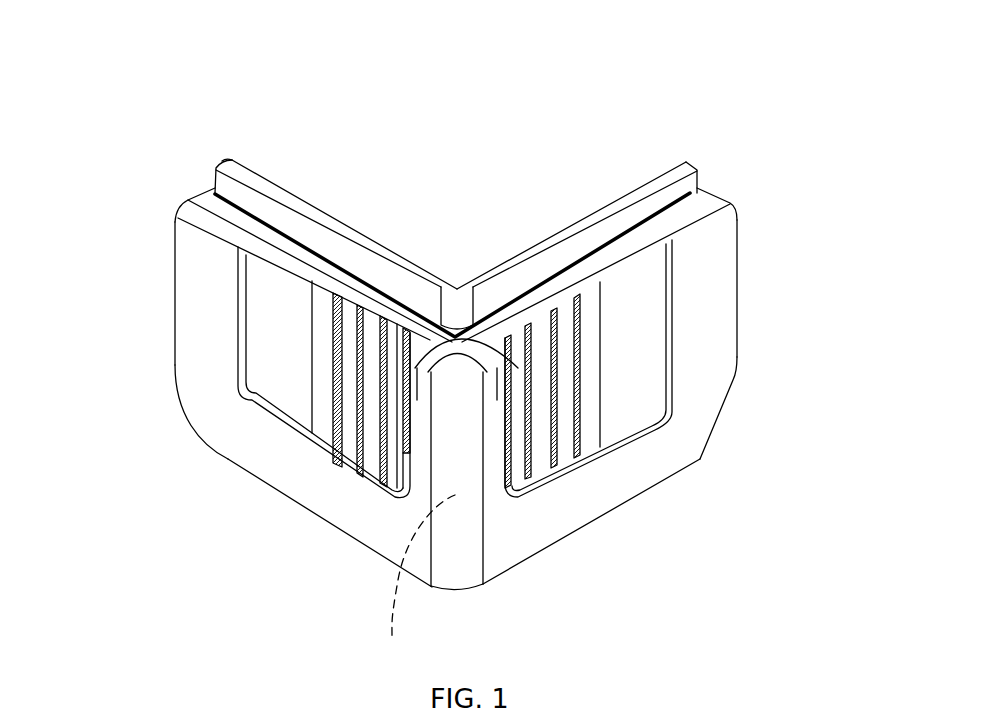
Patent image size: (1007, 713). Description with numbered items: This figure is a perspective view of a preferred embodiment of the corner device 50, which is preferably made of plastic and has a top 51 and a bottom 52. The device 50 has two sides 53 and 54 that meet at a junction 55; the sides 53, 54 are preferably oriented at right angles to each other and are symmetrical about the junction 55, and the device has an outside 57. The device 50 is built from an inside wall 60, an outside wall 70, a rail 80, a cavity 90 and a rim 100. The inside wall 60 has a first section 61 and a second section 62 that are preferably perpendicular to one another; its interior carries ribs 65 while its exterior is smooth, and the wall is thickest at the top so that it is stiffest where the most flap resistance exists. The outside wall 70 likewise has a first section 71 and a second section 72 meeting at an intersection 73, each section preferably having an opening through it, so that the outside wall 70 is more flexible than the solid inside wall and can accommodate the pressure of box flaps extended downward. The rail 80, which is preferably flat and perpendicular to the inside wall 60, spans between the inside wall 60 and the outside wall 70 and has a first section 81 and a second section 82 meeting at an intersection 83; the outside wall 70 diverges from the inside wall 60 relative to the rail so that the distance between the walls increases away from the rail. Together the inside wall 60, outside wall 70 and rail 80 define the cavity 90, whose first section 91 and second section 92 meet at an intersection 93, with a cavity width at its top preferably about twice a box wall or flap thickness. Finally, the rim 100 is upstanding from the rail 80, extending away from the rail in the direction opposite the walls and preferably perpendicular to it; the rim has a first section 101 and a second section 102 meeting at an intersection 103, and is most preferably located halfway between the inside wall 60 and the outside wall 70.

The corner device 50 is at (466, 86).
The top 51 is at (668, 158).
The bottom 52 is at (590, 527).
The side 53 is at (180, 272).
The side 54 is at (747, 365).
The junction 55 is at (463, 371).
The outside 57 is at (200, 352).
The inside wall 60 is at (347, 347).
The first section 61 is at (313, 313).
The second section 62 is at (613, 328).
The ribs 65 is at (580, 402).
The outside wall 70 is at (263, 493).
The first section 71 is at (221, 430).
The second section 72 is at (718, 400).
The intersection 73 is at (458, 567).
The rail 80 is at (404, 302).
The first section 81 is at (207, 197).
The second section 82 is at (703, 188).
The intersection 83 is at (460, 337).
The cavity 90 is at (565, 340).
The first section 91 is at (259, 302).
The second section 92 is at (640, 365).
The intersection 93 is at (421, 583).
The rim 100 is at (638, 186).
The first section 101 is at (230, 163).
The second section 102 is at (702, 173).
The intersection 103 is at (458, 287).